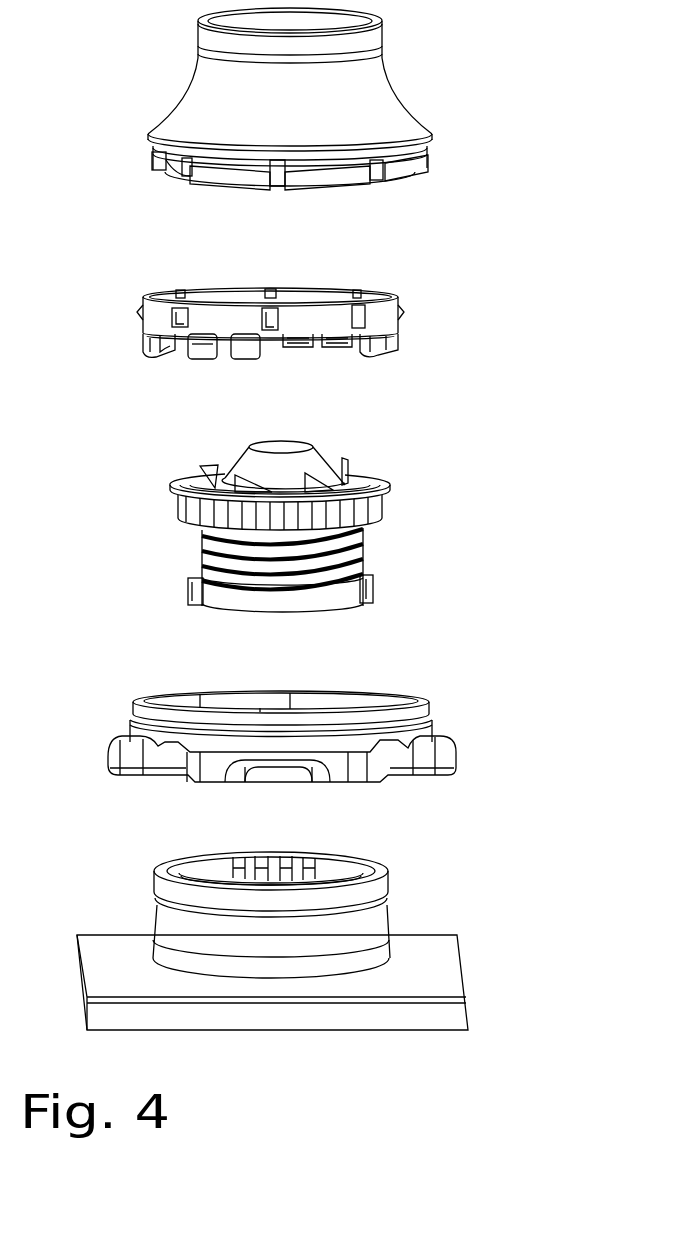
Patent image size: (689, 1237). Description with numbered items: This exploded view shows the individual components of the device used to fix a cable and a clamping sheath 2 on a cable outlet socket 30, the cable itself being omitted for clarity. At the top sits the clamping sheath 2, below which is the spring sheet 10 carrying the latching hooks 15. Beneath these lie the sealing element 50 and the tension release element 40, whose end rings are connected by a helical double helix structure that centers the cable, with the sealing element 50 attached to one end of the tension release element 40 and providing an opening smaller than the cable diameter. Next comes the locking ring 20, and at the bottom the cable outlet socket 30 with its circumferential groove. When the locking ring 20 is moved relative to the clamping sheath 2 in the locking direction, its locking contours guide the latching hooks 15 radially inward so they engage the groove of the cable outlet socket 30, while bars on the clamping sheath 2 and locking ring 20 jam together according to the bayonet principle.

The clamping sheath 2 is at (327, 100).
The spring sheet 10 is at (293, 325).
The latching hooks 15 is at (203, 363).
The sealing element 50 is at (303, 463).
The tension release element 40 is at (316, 598).
The locking ring 20 is at (447, 730).
The cable outlet socket 30 is at (355, 930).